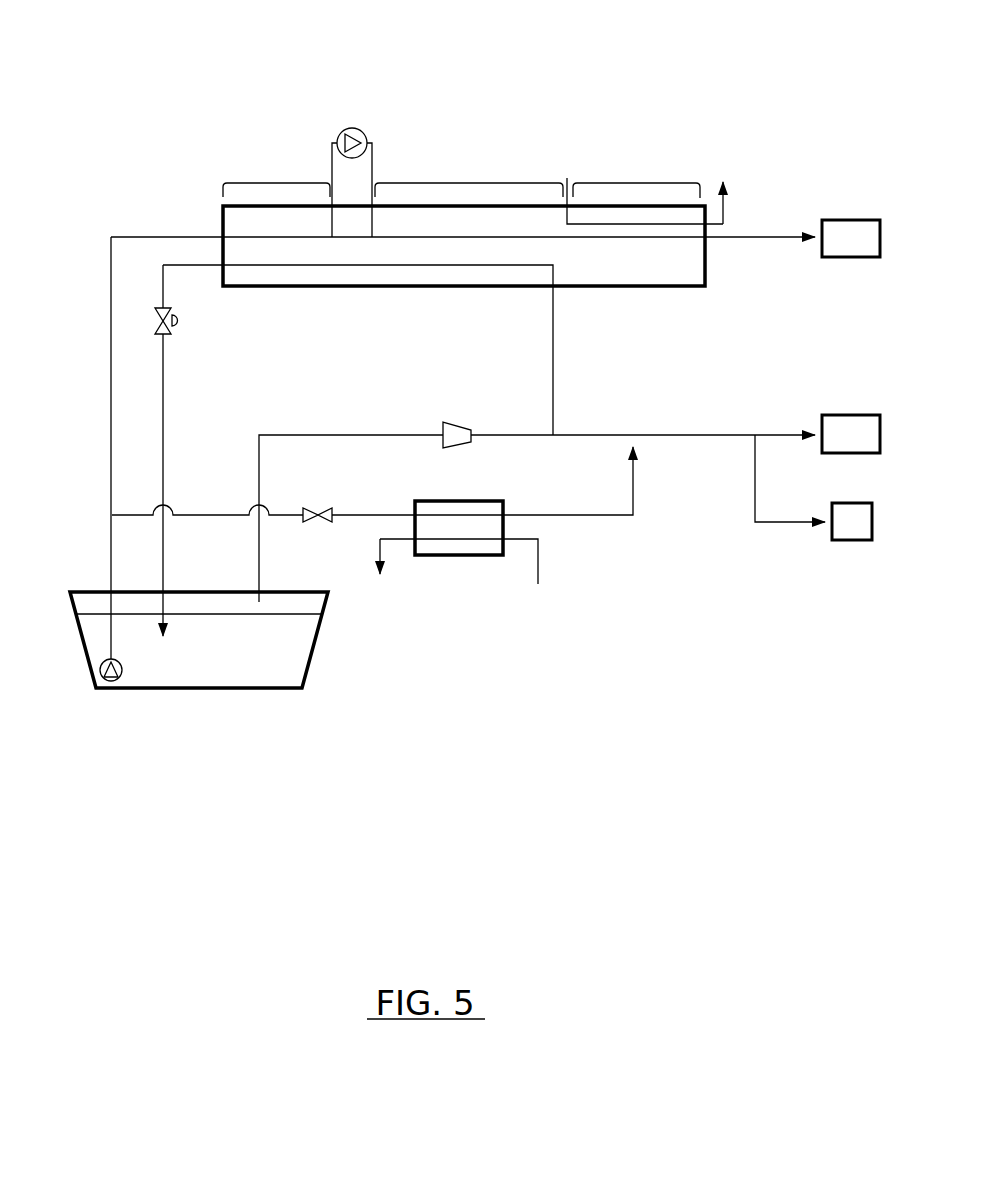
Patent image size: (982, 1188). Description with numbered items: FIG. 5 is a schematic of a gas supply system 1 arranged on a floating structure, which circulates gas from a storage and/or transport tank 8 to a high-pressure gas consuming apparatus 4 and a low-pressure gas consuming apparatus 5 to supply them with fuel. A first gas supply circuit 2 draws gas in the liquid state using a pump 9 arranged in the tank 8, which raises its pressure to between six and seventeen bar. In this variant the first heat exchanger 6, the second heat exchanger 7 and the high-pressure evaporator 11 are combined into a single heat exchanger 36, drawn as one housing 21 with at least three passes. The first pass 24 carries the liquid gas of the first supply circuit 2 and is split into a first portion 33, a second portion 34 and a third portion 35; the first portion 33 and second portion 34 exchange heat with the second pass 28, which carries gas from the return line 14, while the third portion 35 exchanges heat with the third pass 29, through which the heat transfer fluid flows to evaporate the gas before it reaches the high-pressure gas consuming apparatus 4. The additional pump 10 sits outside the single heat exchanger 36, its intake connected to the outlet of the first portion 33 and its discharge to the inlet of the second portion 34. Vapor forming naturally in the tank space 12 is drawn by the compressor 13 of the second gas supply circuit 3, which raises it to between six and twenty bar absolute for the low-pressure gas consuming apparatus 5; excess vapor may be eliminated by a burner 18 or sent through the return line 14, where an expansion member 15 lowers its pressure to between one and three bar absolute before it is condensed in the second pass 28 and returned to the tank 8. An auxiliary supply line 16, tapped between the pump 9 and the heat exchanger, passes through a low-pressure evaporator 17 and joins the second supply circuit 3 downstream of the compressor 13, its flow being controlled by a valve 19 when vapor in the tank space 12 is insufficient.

The gas supply system 1 is at (657, 641).
The first gas supply circuit 2 is at (168, 218).
The second gas supply circuit 3 is at (340, 416).
The high-pressure gas consuming apparatus 4 is at (851, 238).
The low-pressure gas consuming apparatus 5 is at (851, 434).
The first heat exchanger 6 is at (277, 182).
The second heat exchanger 7 is at (468, 182).
The storage and/or transport tank 8 is at (212, 688).
The pump 9 is at (112, 681).
The additional pump 10 is at (352, 128).
The high-pressure evaporator 11 is at (636, 182).
The tank space 12 is at (93, 604).
The compressor 13 is at (456, 421).
The return line 14 is at (574, 327).
The expansion member 15 is at (176, 314).
The auxiliary supply line 16 is at (222, 513).
The low-pressure evaporator 17 is at (458, 556).
The burner 18 is at (813, 487).
The valve 19 is at (318, 522).
The housing 21 is at (705, 260).
The first pass 24 is at (566, 240).
The second pass 28 is at (457, 266).
The third pass 29 is at (680, 222).
The first portion 33 is at (258, 235).
The second portion 34 is at (432, 235).
The third portion 35 is at (640, 240).
The single heat exchanger 36 is at (527, 160).